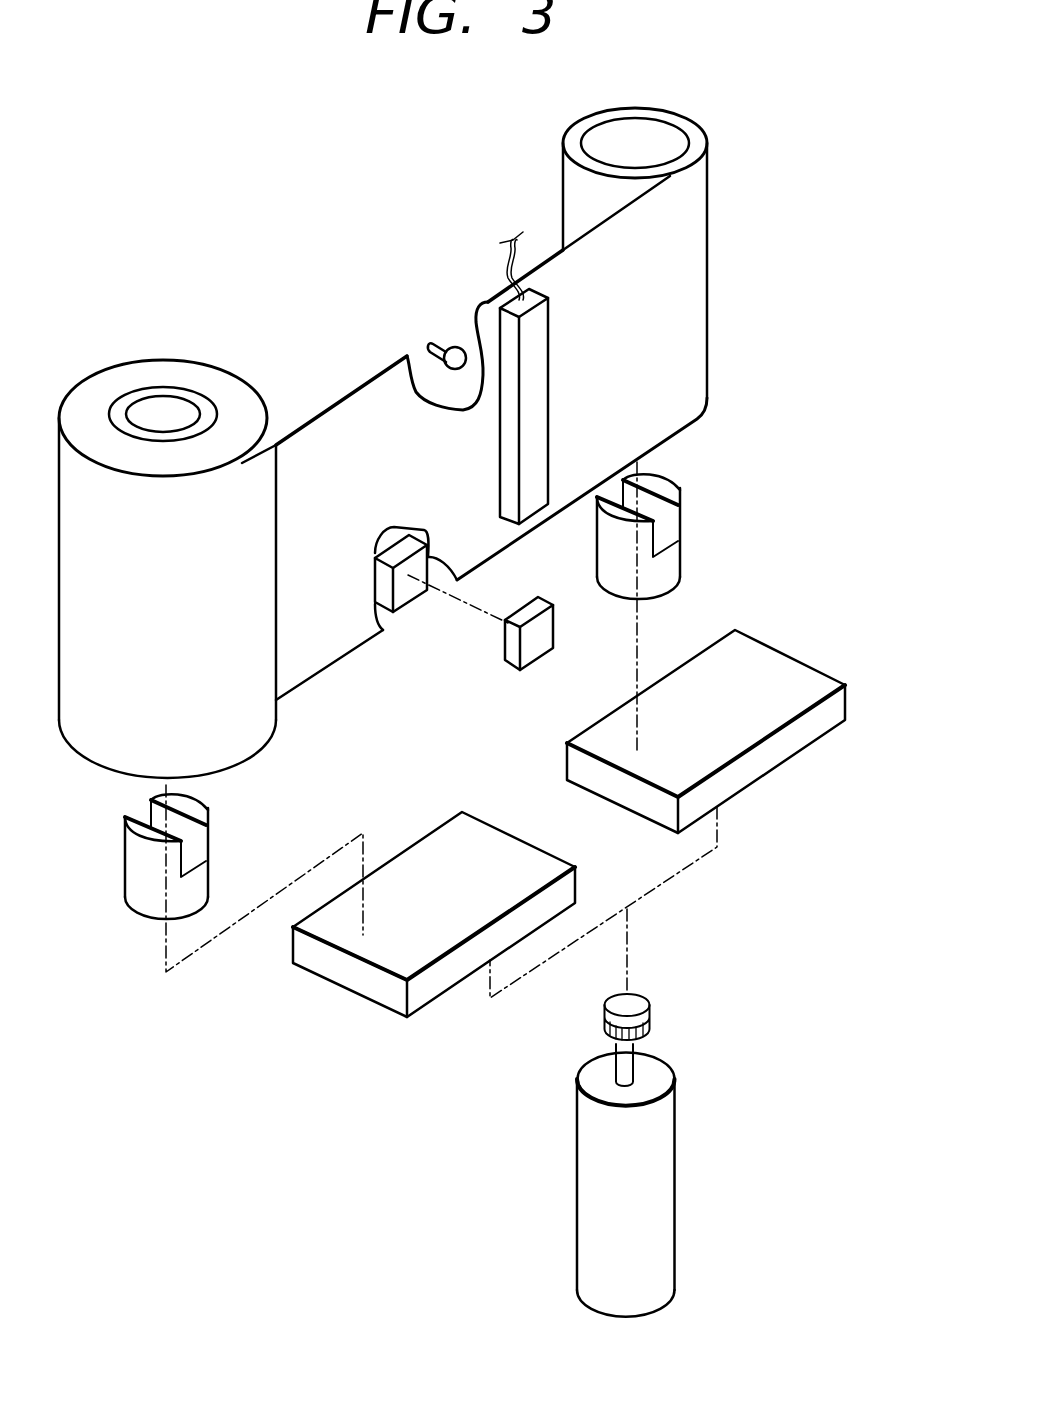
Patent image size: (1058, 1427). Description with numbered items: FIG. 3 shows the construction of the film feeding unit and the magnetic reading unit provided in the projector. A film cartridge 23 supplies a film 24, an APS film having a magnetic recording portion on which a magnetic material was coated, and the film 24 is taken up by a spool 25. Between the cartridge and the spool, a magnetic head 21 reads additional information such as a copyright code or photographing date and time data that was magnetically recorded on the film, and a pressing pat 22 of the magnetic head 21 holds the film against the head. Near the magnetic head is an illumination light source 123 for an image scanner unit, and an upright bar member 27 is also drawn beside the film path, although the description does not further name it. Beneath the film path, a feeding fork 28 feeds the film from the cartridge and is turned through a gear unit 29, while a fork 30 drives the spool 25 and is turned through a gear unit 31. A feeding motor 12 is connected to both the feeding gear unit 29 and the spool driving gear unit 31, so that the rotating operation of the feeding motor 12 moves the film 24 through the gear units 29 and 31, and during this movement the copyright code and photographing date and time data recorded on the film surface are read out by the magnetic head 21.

The feeding motor 12 is at (666, 1157).
The magnetic head 21 is at (508, 658).
The pressing pat 22 is at (407, 595).
The film cartridge 23 is at (193, 365).
The film 24 is at (365, 413).
The spool 25 is at (672, 120).
The bar member 27 is at (543, 405).
The feeding fork 28 is at (202, 882).
The gear unit 29 is at (343, 972).
The fork 30 is at (673, 563).
The gear unit 31 is at (760, 650).
The illumination light source 123 is at (452, 348).